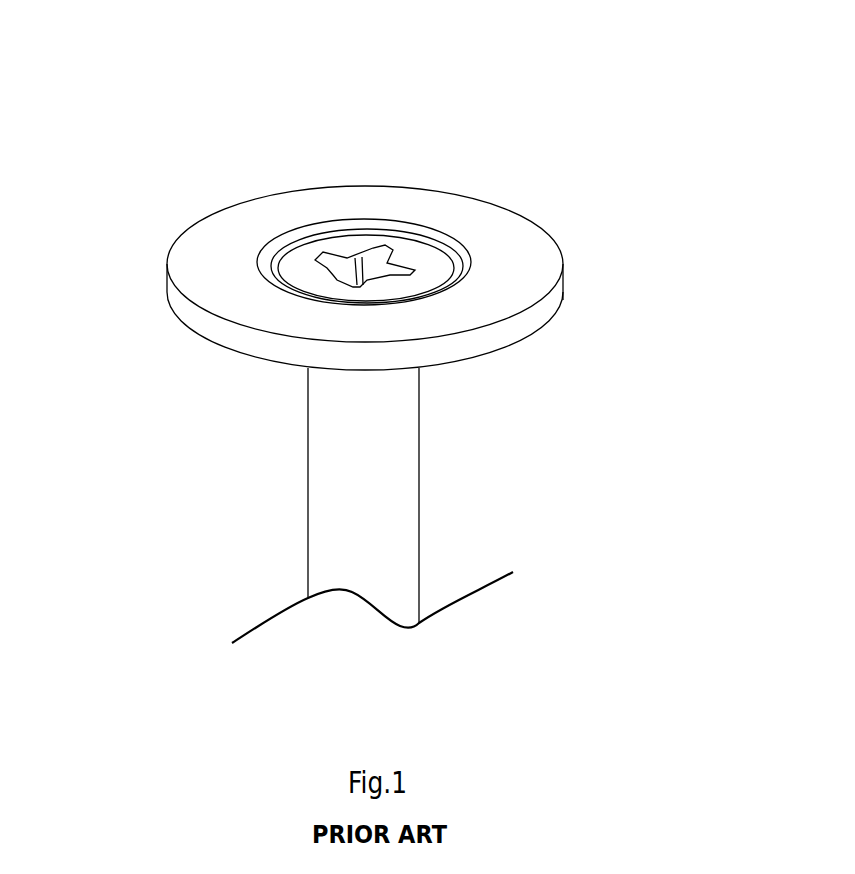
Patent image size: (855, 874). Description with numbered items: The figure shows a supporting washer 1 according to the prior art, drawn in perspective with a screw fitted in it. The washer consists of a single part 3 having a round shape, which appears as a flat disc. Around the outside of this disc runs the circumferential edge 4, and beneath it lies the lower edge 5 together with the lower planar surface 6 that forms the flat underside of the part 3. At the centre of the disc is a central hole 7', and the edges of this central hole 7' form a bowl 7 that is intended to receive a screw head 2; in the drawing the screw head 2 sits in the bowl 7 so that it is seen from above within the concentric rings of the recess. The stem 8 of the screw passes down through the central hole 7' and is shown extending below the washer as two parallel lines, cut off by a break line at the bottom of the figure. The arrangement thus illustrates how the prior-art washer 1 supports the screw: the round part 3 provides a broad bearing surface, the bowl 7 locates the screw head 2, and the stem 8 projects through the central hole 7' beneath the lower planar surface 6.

The supporting washer 1 is at (153, 186).
The screw head 2 is at (415, 253).
The part 3 is at (530, 242).
The circumferential edge 4 is at (555, 302).
The lower edge 5 is at (515, 342).
The lower planar surface 6 is at (470, 366).
The bowl 7 is at (364, 173).
The central hole 7' is at (383, 148).
The stem 8 is at (343, 518).